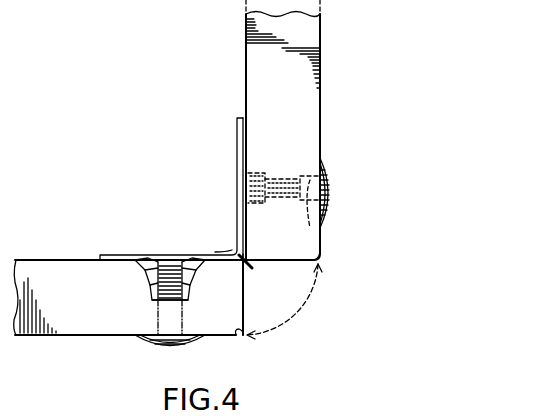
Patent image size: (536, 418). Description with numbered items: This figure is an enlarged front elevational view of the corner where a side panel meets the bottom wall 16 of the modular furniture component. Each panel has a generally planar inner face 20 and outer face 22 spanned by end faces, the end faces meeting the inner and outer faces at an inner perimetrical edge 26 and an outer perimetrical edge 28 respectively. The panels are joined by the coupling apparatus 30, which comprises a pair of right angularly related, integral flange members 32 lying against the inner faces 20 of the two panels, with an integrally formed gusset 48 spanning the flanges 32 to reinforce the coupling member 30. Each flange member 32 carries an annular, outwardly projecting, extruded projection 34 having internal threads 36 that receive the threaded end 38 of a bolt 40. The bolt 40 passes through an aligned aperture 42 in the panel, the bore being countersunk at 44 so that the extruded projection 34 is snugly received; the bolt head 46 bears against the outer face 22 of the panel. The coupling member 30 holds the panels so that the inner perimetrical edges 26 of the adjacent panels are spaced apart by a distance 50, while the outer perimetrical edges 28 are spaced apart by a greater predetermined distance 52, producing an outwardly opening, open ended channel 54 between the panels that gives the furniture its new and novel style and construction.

The bottom wall 16 is at (244, 300).
The inner face 20 is at (246, 51).
The outer face 22 is at (322, 35).
The inner perimetrical edge 26 is at (243, 275).
The outer perimetrical edge 28 is at (308, 259).
The coupling apparatus 30 is at (168, 170).
The flange member 32 is at (237, 140).
The extruded projection 34 is at (258, 174).
The internal threads 36 is at (283, 180).
The threaded end 38 is at (244, 190).
The bolt 40 is at (321, 253).
The aperture 42 is at (150, 302).
The countersink 44 is at (140, 282).
The bolt head 46 is at (326, 180).
The gusset 48 is at (228, 250).
The distance between inner perimetrical edges 50 is at (252, 266).
The distance between outer perimetrical edges 52 is at (258, 334).
The channel 54 is at (312, 294).